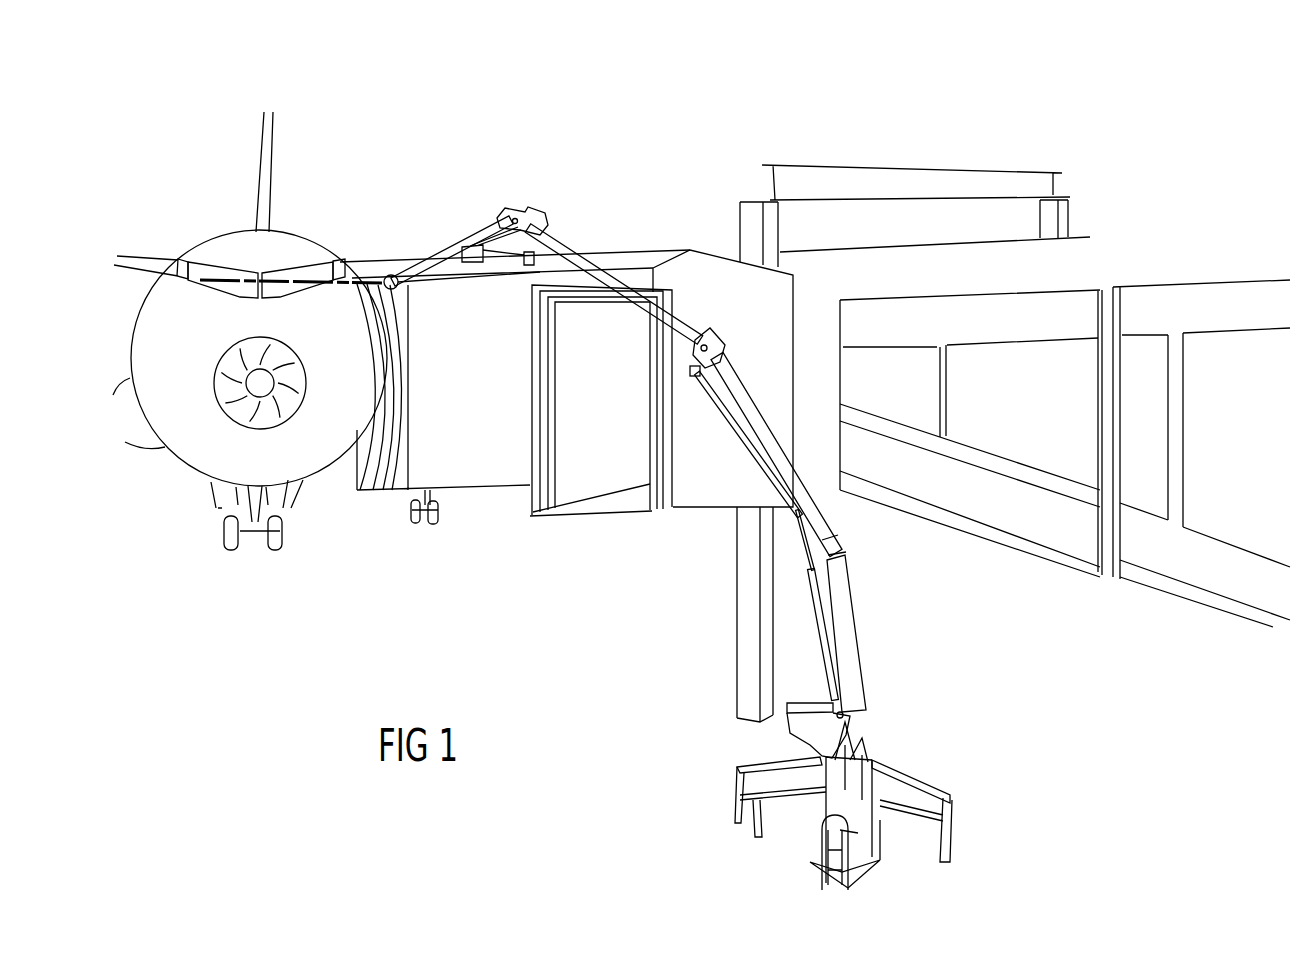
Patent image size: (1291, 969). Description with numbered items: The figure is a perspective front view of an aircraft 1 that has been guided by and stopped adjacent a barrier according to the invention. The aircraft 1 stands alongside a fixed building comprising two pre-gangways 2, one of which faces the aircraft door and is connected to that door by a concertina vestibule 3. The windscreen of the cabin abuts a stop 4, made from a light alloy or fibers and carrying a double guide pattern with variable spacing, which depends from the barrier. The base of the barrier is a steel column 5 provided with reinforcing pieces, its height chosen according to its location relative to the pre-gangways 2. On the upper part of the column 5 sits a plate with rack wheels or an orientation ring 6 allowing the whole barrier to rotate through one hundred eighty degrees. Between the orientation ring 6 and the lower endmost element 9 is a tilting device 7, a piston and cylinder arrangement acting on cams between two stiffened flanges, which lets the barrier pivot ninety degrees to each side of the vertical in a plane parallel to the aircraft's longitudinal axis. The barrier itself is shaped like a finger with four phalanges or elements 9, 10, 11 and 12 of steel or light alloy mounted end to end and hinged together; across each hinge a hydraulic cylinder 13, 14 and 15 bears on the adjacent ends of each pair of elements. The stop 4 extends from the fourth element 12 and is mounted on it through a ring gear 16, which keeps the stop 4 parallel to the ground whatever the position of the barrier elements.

The aircraft 1 is at (200, 443).
The pre-gangways 2 is at (566, 387).
The concertina vestibule 3 is at (393, 492).
The stop 4 is at (262, 278).
The steel column 5 is at (865, 788).
The orientation ring 6 is at (873, 748).
The tilting device 7 is at (829, 688).
The lower endmost element 9 is at (847, 608).
The second element 10 is at (783, 468).
The third element 11 is at (575, 272).
The fourth element 12 is at (453, 247).
The hydraulic cylinder 13 is at (827, 598).
The hydraulic cylinder 14 is at (733, 418).
The hydraulic cylinder 15 is at (540, 264).
The ring gear 16 is at (400, 282).